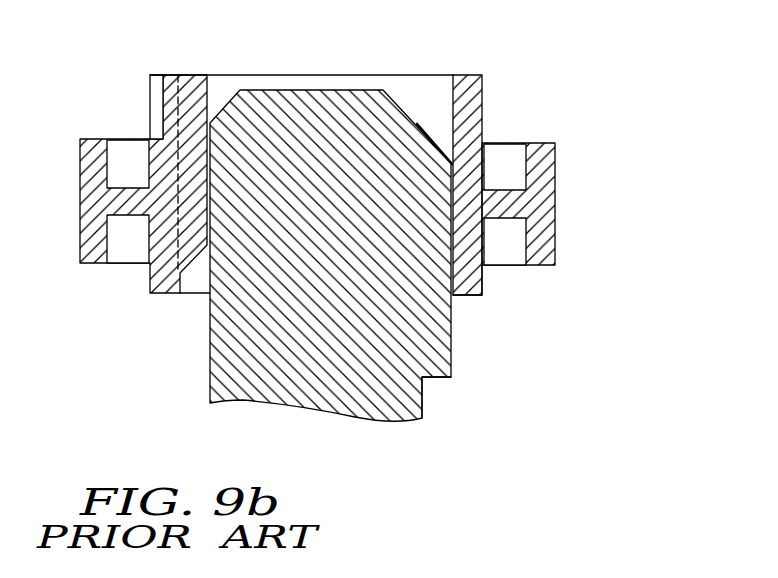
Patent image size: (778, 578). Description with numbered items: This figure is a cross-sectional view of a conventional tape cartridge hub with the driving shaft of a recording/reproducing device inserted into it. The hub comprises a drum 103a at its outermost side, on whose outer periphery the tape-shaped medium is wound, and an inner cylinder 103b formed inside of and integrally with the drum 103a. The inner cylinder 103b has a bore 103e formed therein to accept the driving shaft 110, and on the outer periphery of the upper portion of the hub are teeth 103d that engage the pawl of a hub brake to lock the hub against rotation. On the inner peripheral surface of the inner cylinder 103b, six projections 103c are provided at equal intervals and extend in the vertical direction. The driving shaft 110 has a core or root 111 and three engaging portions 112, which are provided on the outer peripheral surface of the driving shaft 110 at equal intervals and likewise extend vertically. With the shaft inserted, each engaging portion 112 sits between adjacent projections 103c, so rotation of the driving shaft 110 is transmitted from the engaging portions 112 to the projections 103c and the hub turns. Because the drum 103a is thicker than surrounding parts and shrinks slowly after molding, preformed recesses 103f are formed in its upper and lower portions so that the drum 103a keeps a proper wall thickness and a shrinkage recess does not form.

The drum 103a is at (557, 199).
The inner cylinder 103b is at (466, 297).
The projections 103c is at (189, 275).
The teeth 103d is at (487, 282).
The bore 103e is at (422, 88).
The preformed recesses 103f is at (507, 155).
The driving shaft 110 is at (482, 448).
The core 111 is at (372, 422).
The engaging portions 112 is at (440, 379).